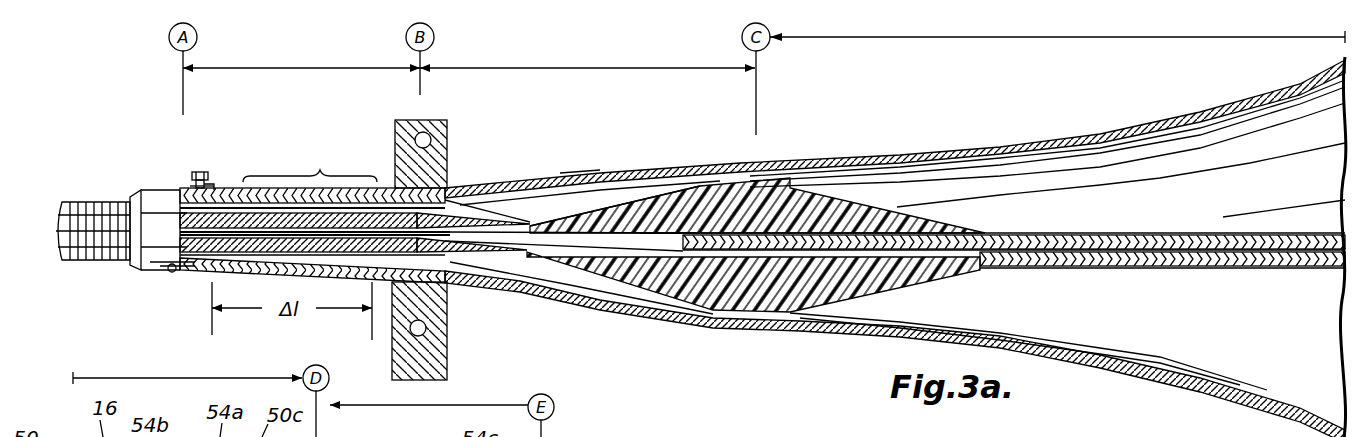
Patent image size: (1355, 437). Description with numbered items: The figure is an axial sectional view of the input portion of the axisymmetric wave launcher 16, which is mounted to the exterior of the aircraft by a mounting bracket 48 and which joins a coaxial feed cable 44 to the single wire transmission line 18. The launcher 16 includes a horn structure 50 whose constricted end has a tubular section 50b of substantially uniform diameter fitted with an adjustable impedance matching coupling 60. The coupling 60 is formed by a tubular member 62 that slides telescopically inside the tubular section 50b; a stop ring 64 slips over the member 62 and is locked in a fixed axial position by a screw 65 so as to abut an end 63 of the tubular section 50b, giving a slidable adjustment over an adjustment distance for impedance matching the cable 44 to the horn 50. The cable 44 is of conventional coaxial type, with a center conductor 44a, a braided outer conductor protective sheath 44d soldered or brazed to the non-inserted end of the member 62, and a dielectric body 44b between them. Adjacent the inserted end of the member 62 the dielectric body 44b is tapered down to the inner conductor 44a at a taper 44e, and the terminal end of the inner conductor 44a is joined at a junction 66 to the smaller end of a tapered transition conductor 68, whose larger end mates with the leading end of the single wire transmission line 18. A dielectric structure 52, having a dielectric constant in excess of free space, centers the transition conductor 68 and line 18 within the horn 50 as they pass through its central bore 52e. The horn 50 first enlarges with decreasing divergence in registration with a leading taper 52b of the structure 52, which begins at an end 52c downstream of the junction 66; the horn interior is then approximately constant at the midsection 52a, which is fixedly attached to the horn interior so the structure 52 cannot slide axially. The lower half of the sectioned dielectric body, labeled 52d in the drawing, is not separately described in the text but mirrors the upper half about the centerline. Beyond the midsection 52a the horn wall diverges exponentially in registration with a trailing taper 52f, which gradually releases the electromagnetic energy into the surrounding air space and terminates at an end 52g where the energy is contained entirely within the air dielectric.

The launcher 16 is at (580, 130).
The single wire transmission line 18 is at (1208, 272).
The coaxial feed cable 44 is at (100, 200).
The center conductor 44a is at (176, 268).
The dielectric body 44b is at (192, 282).
The braided outer conductor protective sheath 44d is at (96, 262).
The taper 44e is at (463, 196).
The mounting bracket 48 is at (448, 130).
The horn structure 50 is at (987, 145).
The tubular section 50b is at (178, 196).
The dielectric structure 52 is at (652, 205).
The midsection 52a is at (770, 162).
The leading taper 52b is at (595, 222).
The end 52c is at (524, 222).
The lower wedge portion of sleeve 52d is at (758, 328).
The central bore 52e is at (682, 244).
The trailing taper 52f is at (896, 218).
The end 52g is at (1003, 215).
The adjustable impedance matching coupling 60 is at (246, 126).
The tubular member 62 is at (165, 270).
The end 63 is at (240, 186).
The stop ring 64 is at (212, 187).
The screw 65 is at (204, 186).
The junction 66 is at (455, 240).
The tapered transition conductor 68 is at (536, 243).